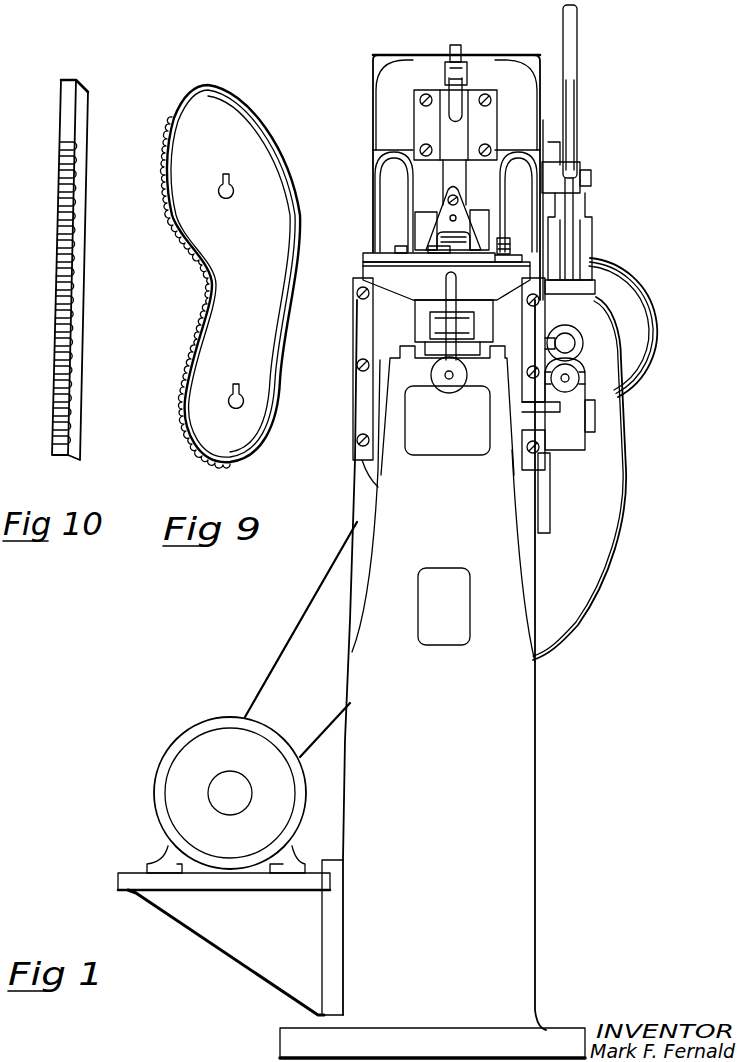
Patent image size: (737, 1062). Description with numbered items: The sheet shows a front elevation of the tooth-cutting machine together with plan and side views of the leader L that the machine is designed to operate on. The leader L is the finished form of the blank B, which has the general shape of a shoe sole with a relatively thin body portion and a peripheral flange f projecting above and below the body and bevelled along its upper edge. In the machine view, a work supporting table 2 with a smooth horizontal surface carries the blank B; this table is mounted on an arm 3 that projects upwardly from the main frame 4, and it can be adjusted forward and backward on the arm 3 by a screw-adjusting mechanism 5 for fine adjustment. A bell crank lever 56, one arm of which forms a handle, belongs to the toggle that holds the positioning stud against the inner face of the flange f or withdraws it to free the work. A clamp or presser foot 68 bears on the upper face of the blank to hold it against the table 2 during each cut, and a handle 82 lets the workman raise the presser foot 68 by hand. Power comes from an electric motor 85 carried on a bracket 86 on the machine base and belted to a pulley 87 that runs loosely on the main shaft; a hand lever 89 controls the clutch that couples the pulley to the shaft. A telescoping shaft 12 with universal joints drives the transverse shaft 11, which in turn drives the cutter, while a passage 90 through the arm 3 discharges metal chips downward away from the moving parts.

In FIG. 1, the work supporting table 2 is at (395, 274).
In FIG. 1, the arm 3 is at (490, 495).
In FIG. 1, the main frame 4 is at (518, 722).
In FIG. 1, the screw-adjusting mechanism 5 is at (446, 387).
In FIG. 1, the shaft 11 is at (584, 390).
In FIG. 1, the telescoping shaft 12 is at (566, 348).
In FIG. 1, the bell crank lever 56 is at (455, 340).
In FIG. 1, the clamp or presser foot 68 is at (440, 240).
In FIG. 1, the handle 82 is at (455, 108).
In FIG. 1, the electric motor 85 is at (182, 775).
In FIG. 1, the bracket 86 is at (195, 920).
In FIG. 1, the pulley 87 is at (618, 291).
In FIG. 1, the hand lever 89 is at (575, 40).
In FIG. 1, the passage 90 is at (428, 605).
In FIG. 1, the blank B is at (410, 253).
In FIG. 10, the leader L is at (75, 252).
In FIG. 9, the leader L is at (220, 342).
In FIG. 10, the peripheral flange f is at (80, 88).
In FIG. 9, the peripheral flange f is at (207, 292).